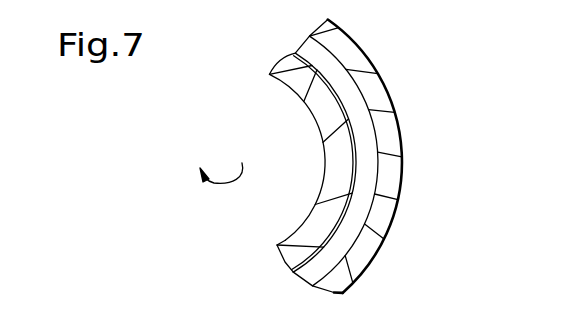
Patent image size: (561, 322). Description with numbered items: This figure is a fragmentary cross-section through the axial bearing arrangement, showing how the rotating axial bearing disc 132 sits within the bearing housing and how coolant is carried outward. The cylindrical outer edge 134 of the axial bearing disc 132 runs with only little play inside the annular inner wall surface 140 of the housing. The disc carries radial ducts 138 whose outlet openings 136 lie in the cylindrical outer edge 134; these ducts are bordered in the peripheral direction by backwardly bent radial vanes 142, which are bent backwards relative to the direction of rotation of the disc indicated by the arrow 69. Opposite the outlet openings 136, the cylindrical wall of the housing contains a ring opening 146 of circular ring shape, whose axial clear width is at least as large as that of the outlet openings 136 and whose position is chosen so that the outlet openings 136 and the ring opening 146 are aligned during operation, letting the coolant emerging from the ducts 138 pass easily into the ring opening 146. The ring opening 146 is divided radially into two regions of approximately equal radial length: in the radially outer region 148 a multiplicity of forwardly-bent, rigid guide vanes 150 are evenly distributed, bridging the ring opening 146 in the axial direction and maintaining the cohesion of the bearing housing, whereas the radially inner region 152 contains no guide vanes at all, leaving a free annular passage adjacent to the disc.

The arrow 69 is at (242, 163).
The axial bearing disc 132 is at (316, 223).
The cylindrical outer edge 134 is at (352, 160).
The outlet openings 136 is at (270, 74).
The radial ducts 138 is at (324, 110).
The annular inner wall surface 140 is at (322, 72).
The backwardly bent radial vanes 142 is at (277, 245).
The ring opening 146 is at (357, 102).
The radially outer region 148 is at (362, 254).
The guide vanes 150 is at (402, 153).
The radially inner region 152 is at (366, 209).